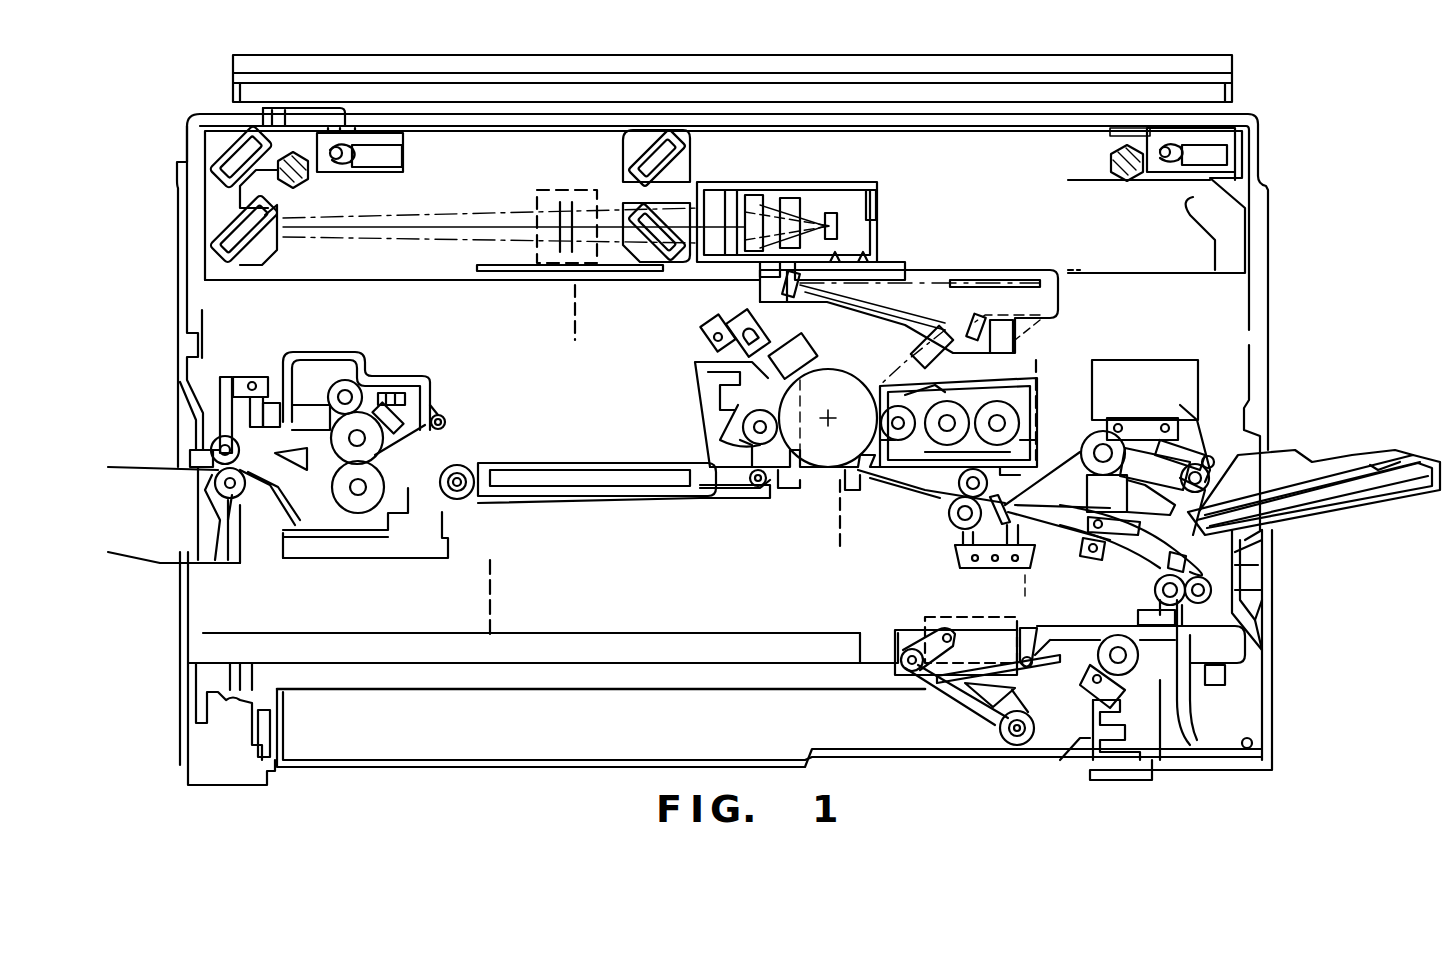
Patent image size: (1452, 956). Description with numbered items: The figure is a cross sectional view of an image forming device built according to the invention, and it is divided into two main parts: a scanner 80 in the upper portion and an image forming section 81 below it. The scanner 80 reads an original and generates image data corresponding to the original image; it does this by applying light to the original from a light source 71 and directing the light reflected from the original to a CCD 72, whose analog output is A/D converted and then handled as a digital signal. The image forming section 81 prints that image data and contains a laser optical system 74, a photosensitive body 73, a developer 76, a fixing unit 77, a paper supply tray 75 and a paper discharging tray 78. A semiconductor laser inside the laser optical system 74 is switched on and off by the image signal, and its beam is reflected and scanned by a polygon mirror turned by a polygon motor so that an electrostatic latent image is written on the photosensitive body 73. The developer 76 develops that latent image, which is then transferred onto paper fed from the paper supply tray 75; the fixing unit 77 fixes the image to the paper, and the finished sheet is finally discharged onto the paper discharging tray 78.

The light source 71 is at (317, 176).
The CCD 72 is at (842, 212).
The photosensitive body 73 is at (843, 396).
The laser optical system 74 is at (1060, 300).
The paper supply tray 75 is at (1382, 466).
The developer 76 is at (917, 477).
The fixing unit 77 is at (357, 558).
The paper discharging tray 78 is at (142, 466).
The scanner 80 is at (1271, 141).
The image forming section 81 is at (1280, 557).